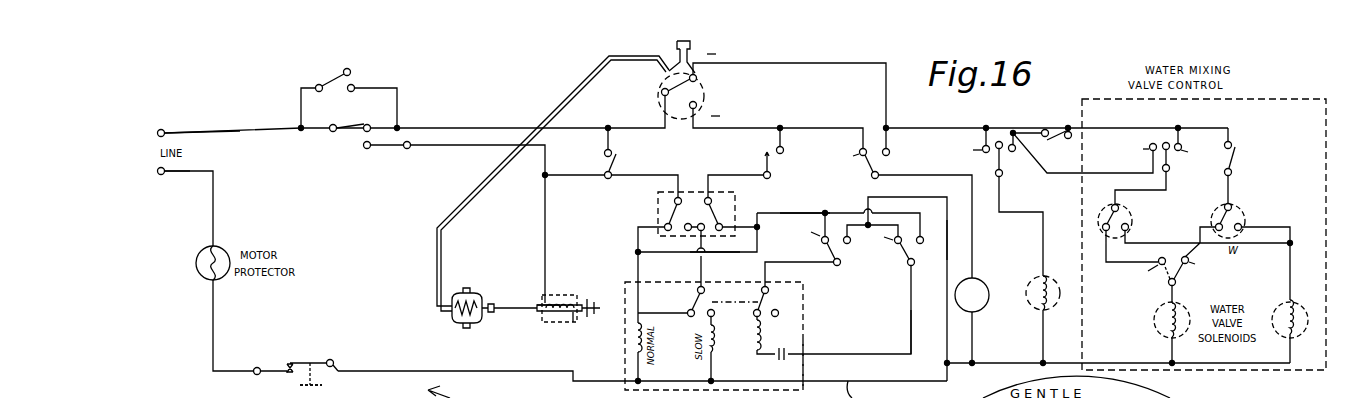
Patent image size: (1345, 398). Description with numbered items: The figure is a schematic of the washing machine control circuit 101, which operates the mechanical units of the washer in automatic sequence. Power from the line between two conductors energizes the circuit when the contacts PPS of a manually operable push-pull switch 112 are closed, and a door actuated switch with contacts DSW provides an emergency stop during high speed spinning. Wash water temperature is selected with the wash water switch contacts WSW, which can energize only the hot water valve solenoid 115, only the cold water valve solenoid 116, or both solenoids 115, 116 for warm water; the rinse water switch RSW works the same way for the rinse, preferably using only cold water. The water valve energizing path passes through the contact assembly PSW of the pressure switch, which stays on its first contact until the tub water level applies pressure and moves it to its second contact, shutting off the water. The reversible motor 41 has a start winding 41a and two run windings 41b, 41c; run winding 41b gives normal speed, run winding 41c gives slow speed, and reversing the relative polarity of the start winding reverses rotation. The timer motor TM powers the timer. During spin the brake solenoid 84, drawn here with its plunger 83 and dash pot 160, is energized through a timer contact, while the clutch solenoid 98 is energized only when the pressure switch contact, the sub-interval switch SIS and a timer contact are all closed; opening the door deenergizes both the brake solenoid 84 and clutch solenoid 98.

The dash pot 160 is at (478, 298).
The brake solenoid 84 is at (547, 328).
The brake solenoid 83 is at (590, 316).
The run winding 41b is at (634, 345).
The run winding 41c is at (716, 346).
The start winding 41a is at (760, 343).
The motor 41 is at (803, 367).
The clutch solenoid 98 is at (1036, 300).
The hot water valve solenoid 115 is at (1166, 318).
The cold water valve solenoid 116 is at (1288, 303).
The control circuit 101 is at (282, 382).
The push-pull switch 112 is at (322, 386).
The pressure switch contact assembly PSW is at (710, 99).
The door actuated switch contacts DSW is at (338, 72).
The push-pull switch contacts PPS is at (302, 362).
The timer motor TM is at (972, 295).
The sub-interval switch SIS is at (1057, 145).
The rinse water switch RSW is at (1134, 216).
The wash water switch contacts WSW is at (1242, 212).